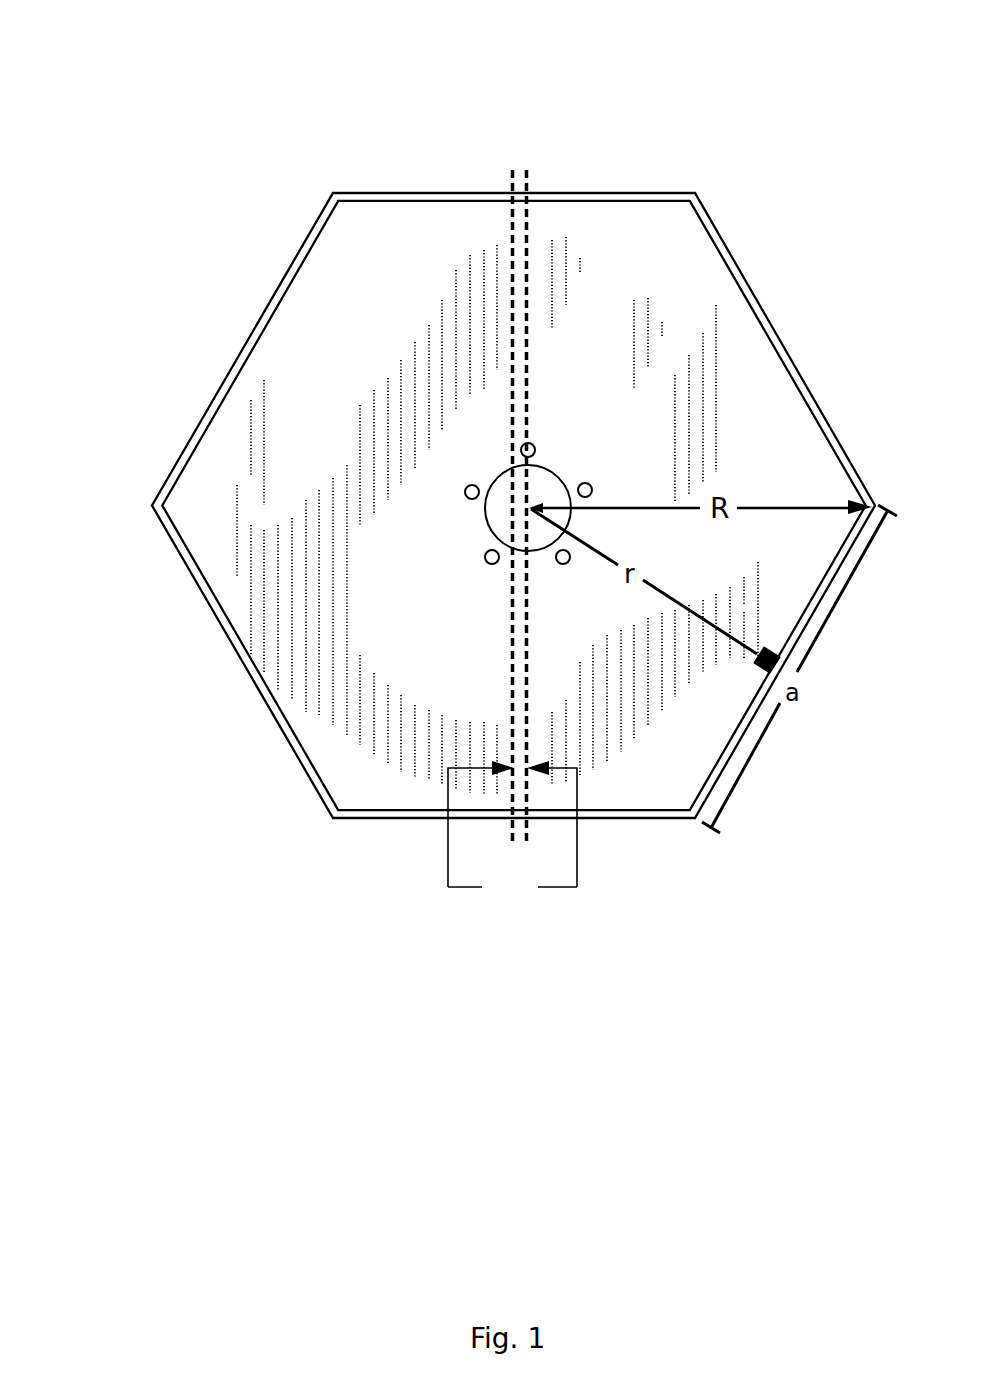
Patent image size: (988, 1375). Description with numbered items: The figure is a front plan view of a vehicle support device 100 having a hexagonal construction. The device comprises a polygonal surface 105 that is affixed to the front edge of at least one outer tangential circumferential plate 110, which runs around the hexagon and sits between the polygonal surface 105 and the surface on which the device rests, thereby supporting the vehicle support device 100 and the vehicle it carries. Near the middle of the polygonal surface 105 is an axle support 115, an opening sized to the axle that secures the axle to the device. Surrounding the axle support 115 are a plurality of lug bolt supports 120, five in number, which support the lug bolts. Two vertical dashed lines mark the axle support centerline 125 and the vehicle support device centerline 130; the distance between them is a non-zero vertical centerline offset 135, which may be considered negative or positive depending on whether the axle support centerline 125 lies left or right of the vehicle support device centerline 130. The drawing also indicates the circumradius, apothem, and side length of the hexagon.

The vehicle support device 100 is at (159, 60).
The polygonal surface 105 is at (323, 234).
The outer tangential circumferential plate 110 is at (228, 325).
The axle support 115 is at (475, 517).
The lug bolt supports 120 is at (463, 575).
The axle support centerline 125 is at (497, 592).
The vehicle support device centerline 130 is at (491, 618).
The vertical centerline offset 135 is at (512, 833).